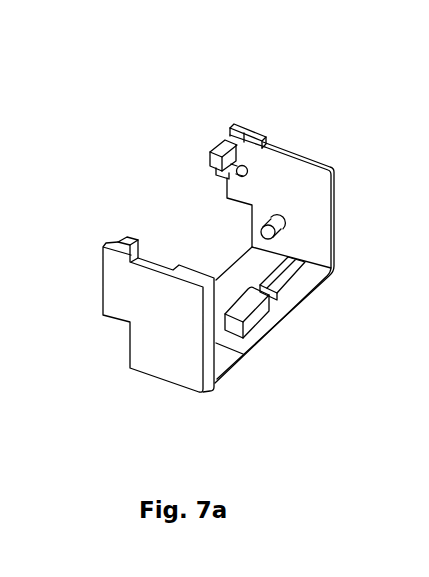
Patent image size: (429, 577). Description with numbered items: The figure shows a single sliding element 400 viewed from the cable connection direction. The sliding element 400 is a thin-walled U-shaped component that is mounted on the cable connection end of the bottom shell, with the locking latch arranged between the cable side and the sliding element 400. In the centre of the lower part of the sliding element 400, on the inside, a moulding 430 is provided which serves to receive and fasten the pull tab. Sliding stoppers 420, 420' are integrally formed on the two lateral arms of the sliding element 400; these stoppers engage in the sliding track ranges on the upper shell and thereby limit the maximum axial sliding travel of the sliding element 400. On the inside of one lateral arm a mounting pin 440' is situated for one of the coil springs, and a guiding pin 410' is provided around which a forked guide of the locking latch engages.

The sliding element 400 is at (230, 209).
The sliding stopper 420 is at (137, 272).
The sliding stopper 420' is at (273, 106).
The mounting pin 440' is at (313, 135).
The guiding pin 410' is at (330, 216).
The moulding 430 is at (248, 305).